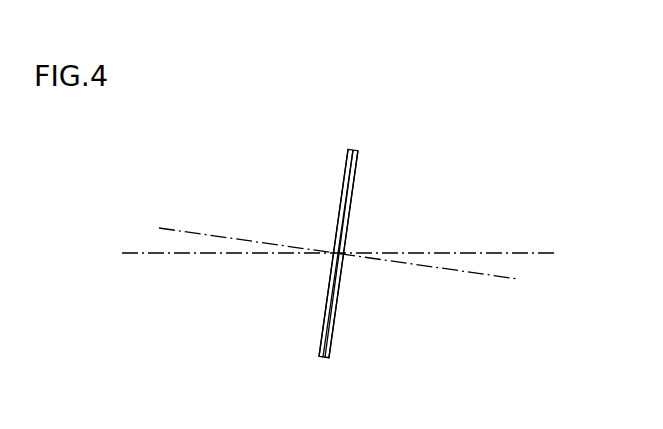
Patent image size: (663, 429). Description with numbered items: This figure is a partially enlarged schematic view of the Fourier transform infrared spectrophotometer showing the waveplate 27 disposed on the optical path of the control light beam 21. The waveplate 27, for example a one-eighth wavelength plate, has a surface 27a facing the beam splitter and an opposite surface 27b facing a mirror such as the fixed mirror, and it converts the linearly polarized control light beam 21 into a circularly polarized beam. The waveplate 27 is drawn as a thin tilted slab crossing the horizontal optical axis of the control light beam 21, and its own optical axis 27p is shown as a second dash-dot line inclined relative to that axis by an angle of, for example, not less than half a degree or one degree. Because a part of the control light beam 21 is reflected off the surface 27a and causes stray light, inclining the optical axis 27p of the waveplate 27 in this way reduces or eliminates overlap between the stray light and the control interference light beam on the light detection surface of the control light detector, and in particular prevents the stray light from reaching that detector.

The control light beam 21 is at (518, 252).
The waveplate 27 is at (352, 149).
The surface 27a is at (360, 161).
The surface 27b is at (345, 161).
The optical axis of waveplate 27p is at (482, 276).